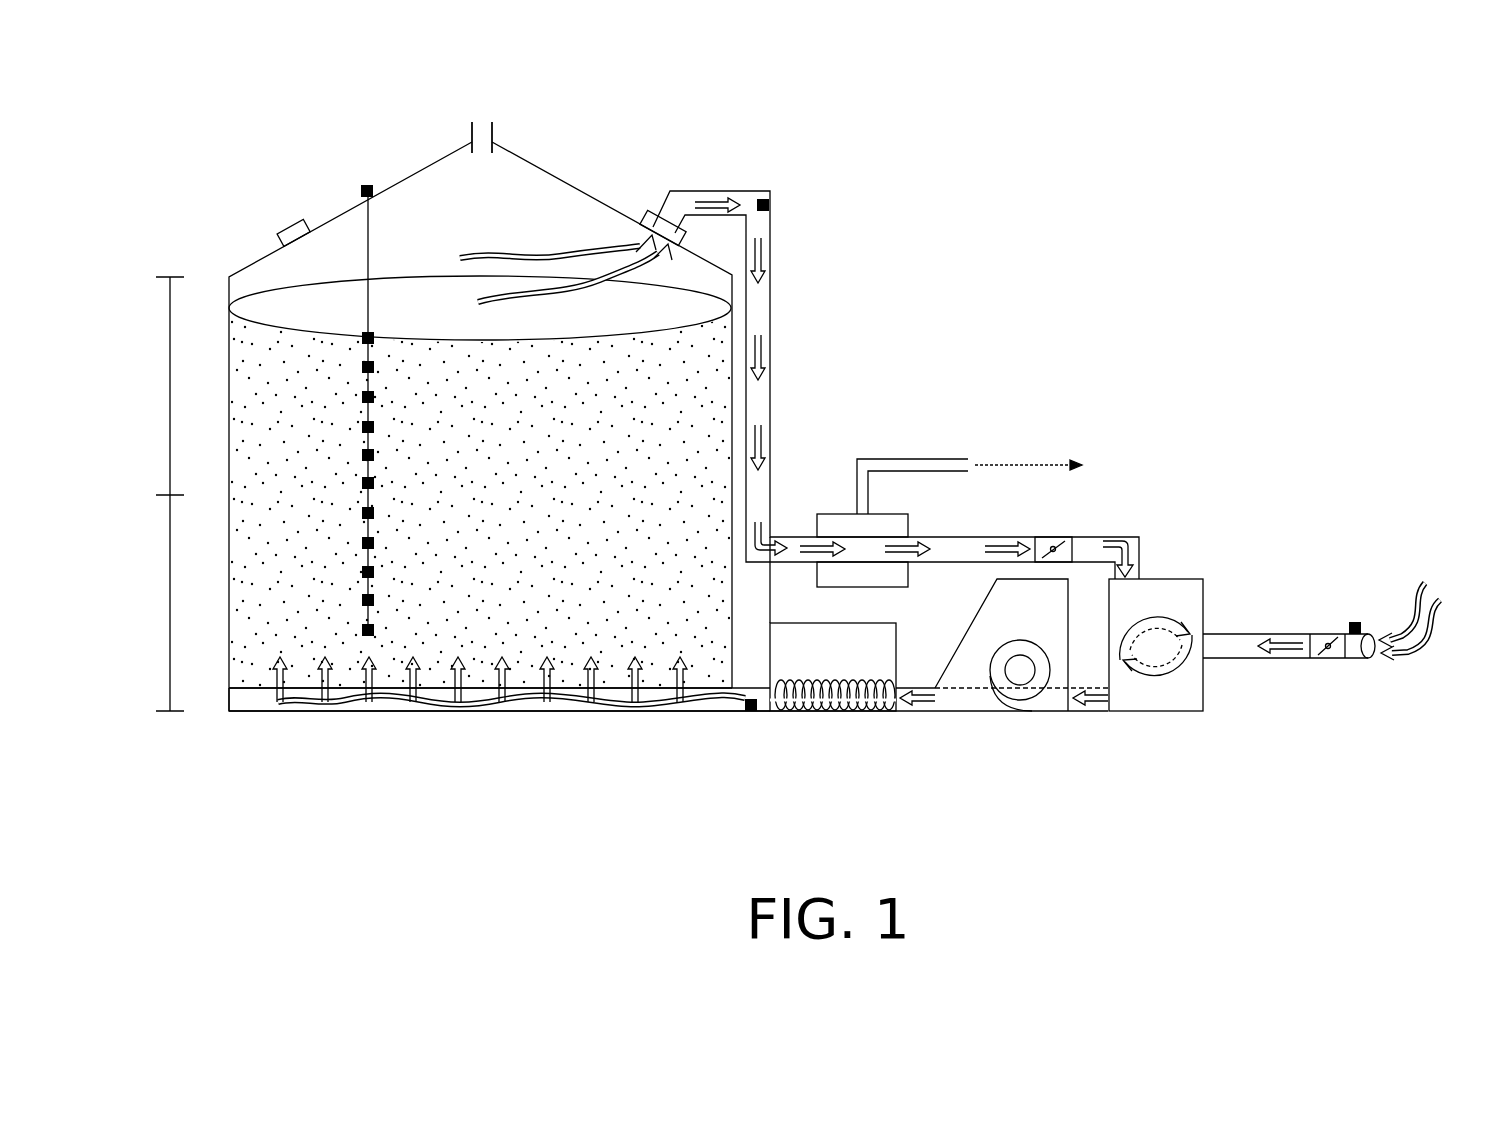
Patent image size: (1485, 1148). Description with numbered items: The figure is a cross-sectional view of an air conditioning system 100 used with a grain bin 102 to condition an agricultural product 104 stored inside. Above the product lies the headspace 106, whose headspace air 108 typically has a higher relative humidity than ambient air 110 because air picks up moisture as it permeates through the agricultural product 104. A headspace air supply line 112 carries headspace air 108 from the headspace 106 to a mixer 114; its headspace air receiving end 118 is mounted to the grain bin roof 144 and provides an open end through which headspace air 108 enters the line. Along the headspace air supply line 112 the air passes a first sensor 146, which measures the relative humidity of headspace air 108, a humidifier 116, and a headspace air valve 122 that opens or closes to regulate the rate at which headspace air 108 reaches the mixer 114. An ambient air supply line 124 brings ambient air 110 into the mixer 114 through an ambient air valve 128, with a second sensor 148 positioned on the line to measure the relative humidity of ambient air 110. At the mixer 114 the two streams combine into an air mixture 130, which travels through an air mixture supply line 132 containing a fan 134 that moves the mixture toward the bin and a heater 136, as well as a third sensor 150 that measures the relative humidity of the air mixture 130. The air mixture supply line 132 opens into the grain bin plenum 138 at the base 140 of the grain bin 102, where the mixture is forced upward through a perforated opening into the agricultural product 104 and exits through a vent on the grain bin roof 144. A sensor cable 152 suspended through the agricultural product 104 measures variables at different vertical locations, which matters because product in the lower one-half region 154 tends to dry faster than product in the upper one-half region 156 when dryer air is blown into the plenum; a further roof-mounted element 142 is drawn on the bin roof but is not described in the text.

The air conditioning system 100 is at (1408, 127).
The grain bin 102 is at (328, 216).
The agricultural product 104 is at (461, 500).
The headspace 106 is at (400, 224).
The headspace air 108 is at (567, 248).
The ambient air 110 is at (1410, 655).
The headspace air supply line 112 is at (778, 392).
The mixer 114 is at (1179, 578).
The humidifier 116 is at (835, 513).
The headspace air receiving end 118 is at (655, 222).
The headspace air valve 122 is at (1052, 537).
The ambient air supply line 124 is at (1288, 628).
The ambient air valve 128 is at (1318, 660).
The air mixture 130 is at (616, 708).
The air mixture supply line 132 is at (920, 718).
The fan 134 is at (963, 640).
The heater 136 is at (790, 622).
The grain bin plenum 138 is at (225, 690).
The base 140 is at (400, 712).
The roof sensor 142 is at (288, 227).
The grain bin roof 144 is at (441, 153).
The first sensor 146 is at (773, 205).
The second sensor 148 is at (1355, 620).
The third sensor 150 is at (751, 712).
The sensor cable 152 is at (368, 263).
The lower one-half region 154 is at (170, 690).
The upper one-half region 156 is at (170, 478).